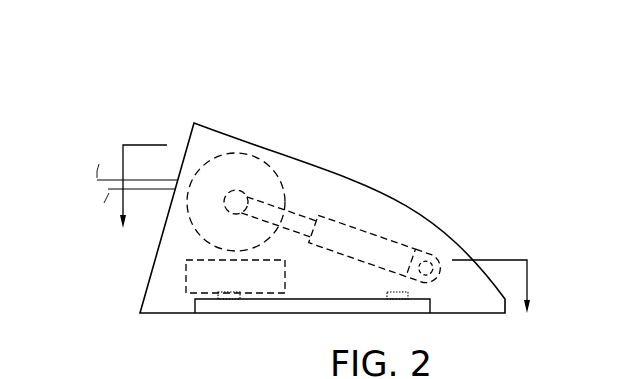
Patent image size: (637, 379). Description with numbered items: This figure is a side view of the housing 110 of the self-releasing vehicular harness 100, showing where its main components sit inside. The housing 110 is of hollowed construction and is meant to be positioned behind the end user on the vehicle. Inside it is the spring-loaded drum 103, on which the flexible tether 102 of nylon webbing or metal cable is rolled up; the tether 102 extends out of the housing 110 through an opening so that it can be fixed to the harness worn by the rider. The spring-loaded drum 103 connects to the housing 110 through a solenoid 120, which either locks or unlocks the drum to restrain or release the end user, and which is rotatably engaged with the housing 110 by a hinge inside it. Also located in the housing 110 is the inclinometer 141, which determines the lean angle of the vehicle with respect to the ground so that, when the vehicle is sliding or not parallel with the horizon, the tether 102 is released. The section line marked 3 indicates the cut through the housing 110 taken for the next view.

The self-releasing vehicular harness 100 is at (448, 101).
The housing 110 is at (230, 135).
The tether 102 is at (163, 180).
The spring-loaded drum 103 is at (252, 156).
The solenoid 120 is at (363, 230).
The inclinometer 141 is at (187, 273).
The section line 3- 3 is at (325, 230).